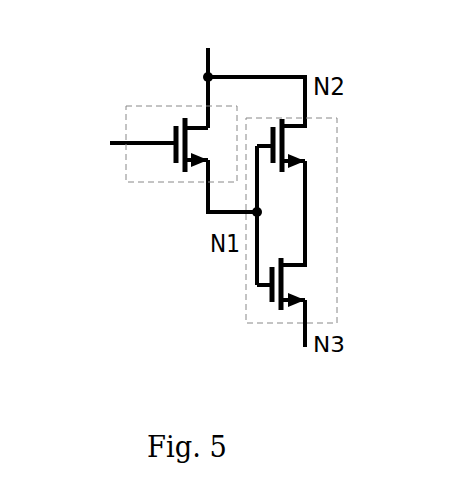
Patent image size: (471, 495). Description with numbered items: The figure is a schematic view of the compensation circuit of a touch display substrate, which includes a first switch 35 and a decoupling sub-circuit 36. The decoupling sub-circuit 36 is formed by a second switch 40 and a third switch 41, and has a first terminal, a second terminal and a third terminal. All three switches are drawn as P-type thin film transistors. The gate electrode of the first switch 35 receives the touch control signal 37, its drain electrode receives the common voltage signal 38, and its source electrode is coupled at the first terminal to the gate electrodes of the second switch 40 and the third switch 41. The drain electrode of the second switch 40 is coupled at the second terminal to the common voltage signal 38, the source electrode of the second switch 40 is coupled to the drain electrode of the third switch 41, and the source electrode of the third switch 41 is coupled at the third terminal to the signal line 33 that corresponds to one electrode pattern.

The signal line 33 is at (307, 353).
The first switch 35 is at (126, 182).
The decoupling sub-circuit 36 is at (245, 323).
The touch control signal 37 is at (108, 147).
The common voltage signal 38 is at (200, 38).
The second switch 40 is at (292, 152).
The third switch 41 is at (300, 290).